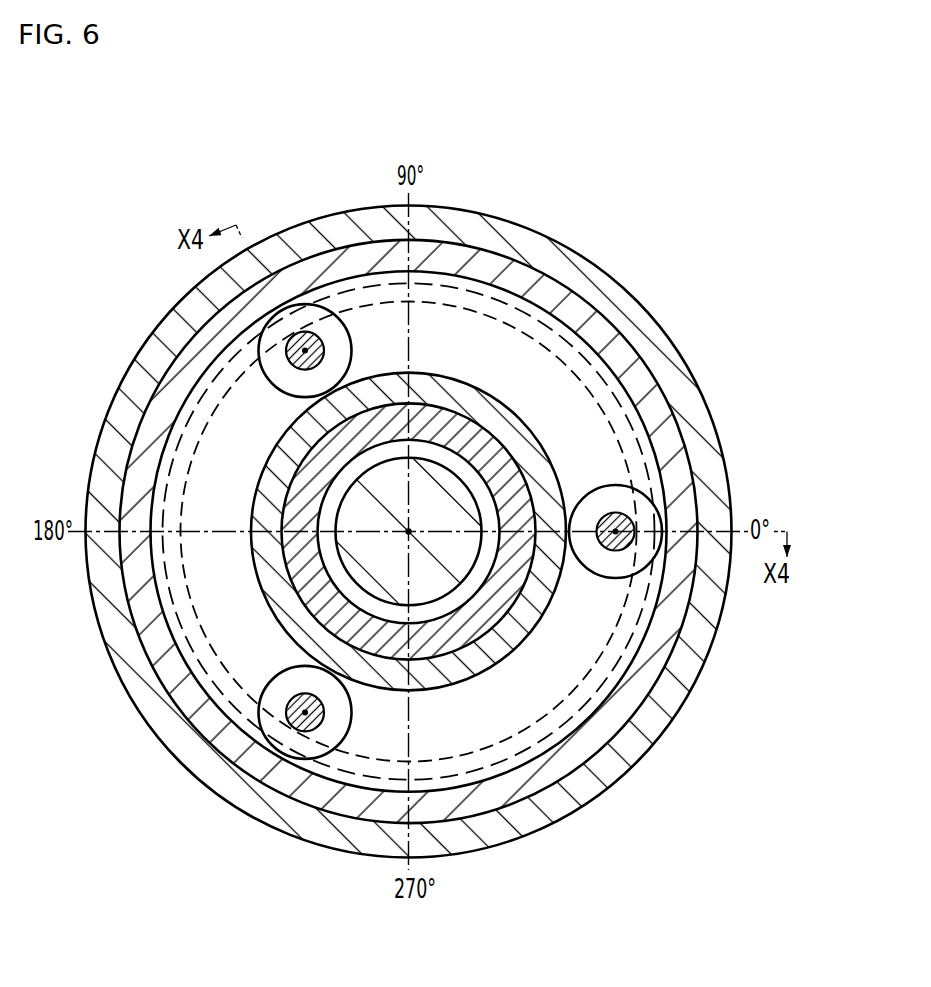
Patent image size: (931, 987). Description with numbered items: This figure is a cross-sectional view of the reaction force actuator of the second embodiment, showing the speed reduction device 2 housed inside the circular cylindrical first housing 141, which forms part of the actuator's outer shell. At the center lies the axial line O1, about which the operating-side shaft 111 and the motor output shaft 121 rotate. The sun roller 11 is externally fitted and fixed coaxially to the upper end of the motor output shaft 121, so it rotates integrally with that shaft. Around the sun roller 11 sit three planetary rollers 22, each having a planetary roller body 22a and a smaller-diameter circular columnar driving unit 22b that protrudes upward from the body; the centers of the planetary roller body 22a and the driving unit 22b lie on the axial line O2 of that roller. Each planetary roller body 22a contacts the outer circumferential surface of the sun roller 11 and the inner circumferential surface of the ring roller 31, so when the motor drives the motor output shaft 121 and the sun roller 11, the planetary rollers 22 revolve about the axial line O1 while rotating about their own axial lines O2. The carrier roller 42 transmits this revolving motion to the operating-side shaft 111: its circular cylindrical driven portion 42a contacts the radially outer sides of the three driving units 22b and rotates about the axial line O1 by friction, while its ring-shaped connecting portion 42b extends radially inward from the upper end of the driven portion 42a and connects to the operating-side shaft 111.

The speed reduction device 2 is at (511, 203).
The first housing 141 is at (577, 246).
The carrier roller 42 is at (424, 521).
The driven portion 42a is at (612, 385).
The connecting portion 42b is at (572, 343).
The ring roller 31 is at (663, 436).
The planetary roller 22 is at (413, 584).
The planetary roller body 22a is at (303, 351).
The driving unit 22b is at (291, 388).
The sun roller 11 is at (442, 673).
The operating-side shaft 111 is at (512, 613).
The motor output shaft 121 is at (470, 630).
The axial line O1 is at (412, 528).
The axial line O2 is at (351, 350).